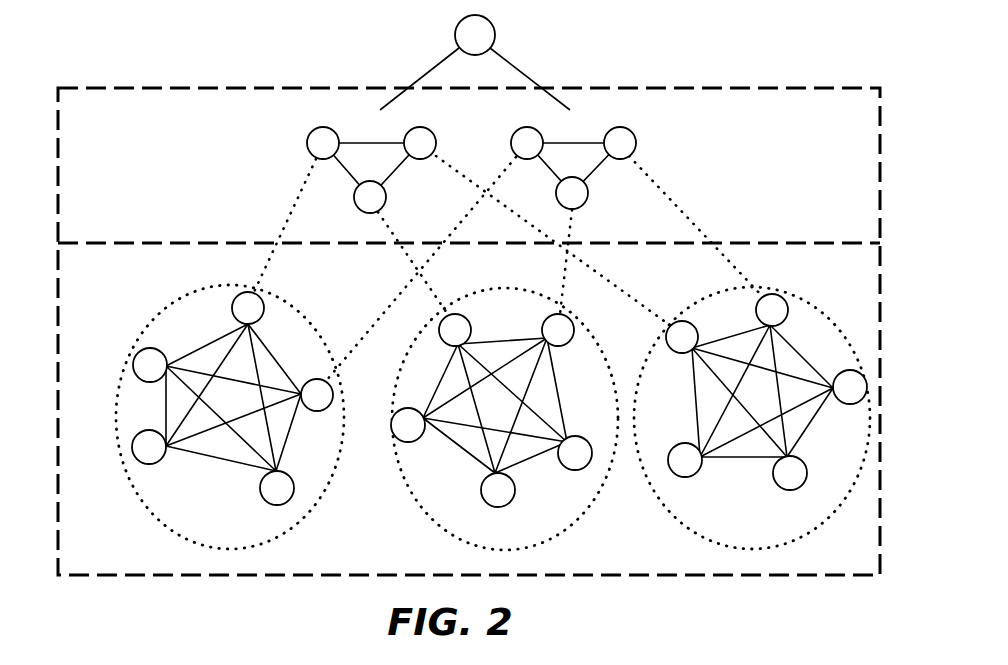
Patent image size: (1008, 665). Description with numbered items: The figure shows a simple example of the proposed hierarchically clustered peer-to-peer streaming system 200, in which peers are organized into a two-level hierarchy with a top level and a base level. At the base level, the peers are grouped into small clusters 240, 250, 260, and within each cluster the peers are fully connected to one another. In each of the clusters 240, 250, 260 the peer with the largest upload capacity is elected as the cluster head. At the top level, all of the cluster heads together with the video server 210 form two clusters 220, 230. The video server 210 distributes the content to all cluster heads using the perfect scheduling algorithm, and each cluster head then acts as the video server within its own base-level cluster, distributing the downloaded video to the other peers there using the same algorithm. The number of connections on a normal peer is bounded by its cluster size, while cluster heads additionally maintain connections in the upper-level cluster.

The hierarchically clustered P2P streaming system 200 is at (731, 32).
The video server 210 is at (495, 32).
The top-level cluster 220 is at (430, 128).
The top-level cluster 230 is at (632, 129).
The base-level cluster 240 is at (178, 517).
The base-level cluster 250 is at (532, 517).
The base-level cluster 260 is at (722, 517).